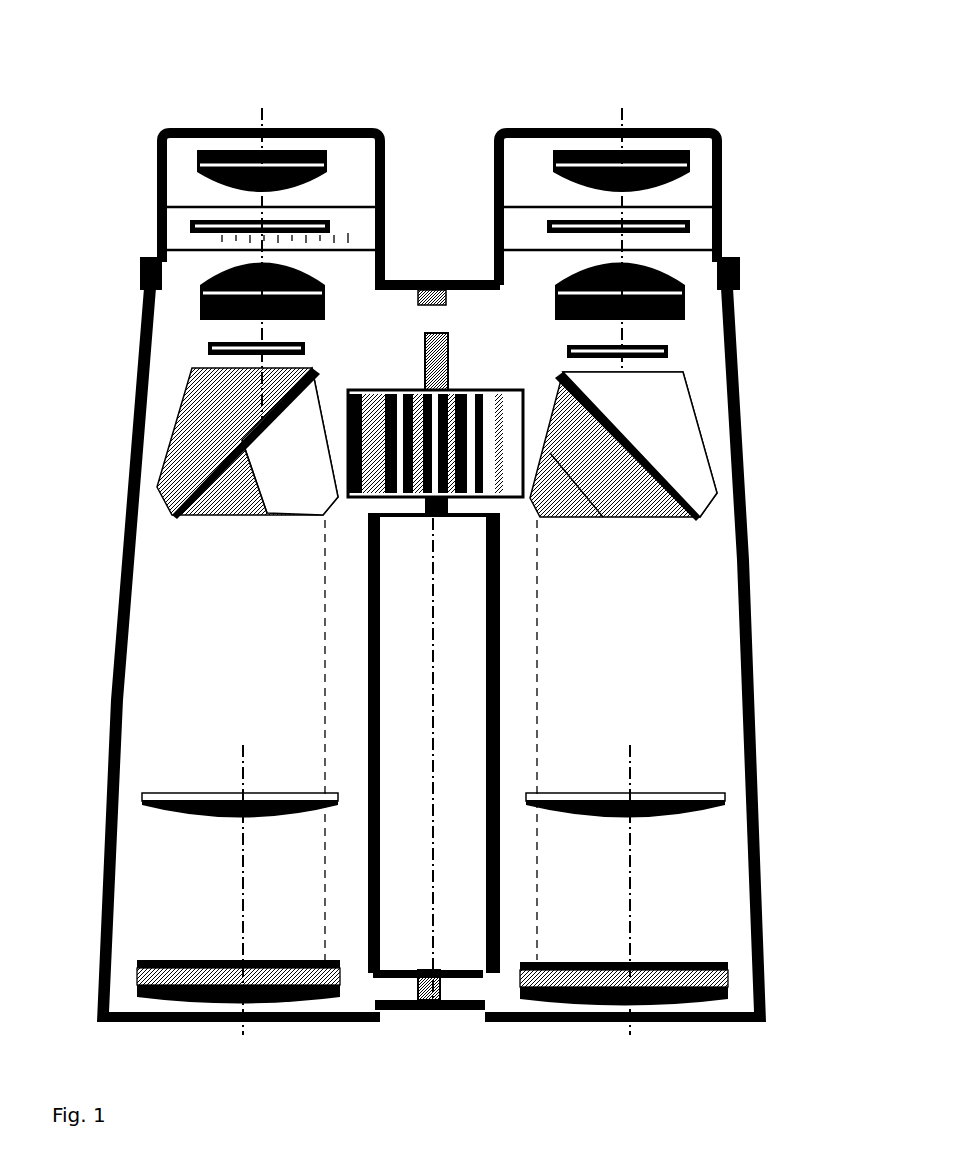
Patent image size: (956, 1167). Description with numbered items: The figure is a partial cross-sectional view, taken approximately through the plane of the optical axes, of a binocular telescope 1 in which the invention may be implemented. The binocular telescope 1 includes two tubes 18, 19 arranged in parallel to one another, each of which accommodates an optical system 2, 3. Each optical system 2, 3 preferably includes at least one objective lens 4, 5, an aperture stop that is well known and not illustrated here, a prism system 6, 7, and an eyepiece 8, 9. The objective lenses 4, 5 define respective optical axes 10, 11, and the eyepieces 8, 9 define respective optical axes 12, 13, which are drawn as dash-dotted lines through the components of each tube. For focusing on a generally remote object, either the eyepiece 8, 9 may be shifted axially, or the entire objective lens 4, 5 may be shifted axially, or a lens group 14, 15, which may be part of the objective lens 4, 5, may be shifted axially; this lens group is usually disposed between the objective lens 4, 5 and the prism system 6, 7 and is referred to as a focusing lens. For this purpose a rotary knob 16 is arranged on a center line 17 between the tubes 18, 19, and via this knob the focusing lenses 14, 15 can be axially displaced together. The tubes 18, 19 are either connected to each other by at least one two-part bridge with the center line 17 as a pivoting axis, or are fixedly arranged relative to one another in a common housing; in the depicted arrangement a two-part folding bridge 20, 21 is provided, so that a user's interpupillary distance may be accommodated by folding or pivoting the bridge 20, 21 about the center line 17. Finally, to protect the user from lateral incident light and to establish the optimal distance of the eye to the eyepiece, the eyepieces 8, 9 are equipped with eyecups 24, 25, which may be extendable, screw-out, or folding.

The binocular telescope 1 is at (440, 186).
The optical system 2 is at (196, 416).
The optical system 3 is at (676, 423).
The objective lens 4 is at (80, 785).
The objective lens 5 is at (778, 792).
The prism system 6 is at (192, 457).
The prism system 7 is at (647, 493).
The eyepiece 8 is at (120, 332).
The eyepiece 9 is at (768, 332).
The optical axis 10 is at (232, 1028).
The optical axis 11 is at (649, 1036).
The optical axis 12 is at (244, 107).
The optical axis 13 is at (641, 107).
The focusing lens 14 is at (193, 793).
The focusing lens 15 is at (662, 793).
The rotary knob 16 is at (403, 447).
The center line 17 is at (682, 648).
The tube 18 is at (172, 670).
The tube 19 is at (433, 645).
The folding bridge 20 is at (397, 312).
The folding bridge 21 is at (466, 987).
The eyecup 24 is at (172, 128).
The eyecup 25 is at (712, 130).